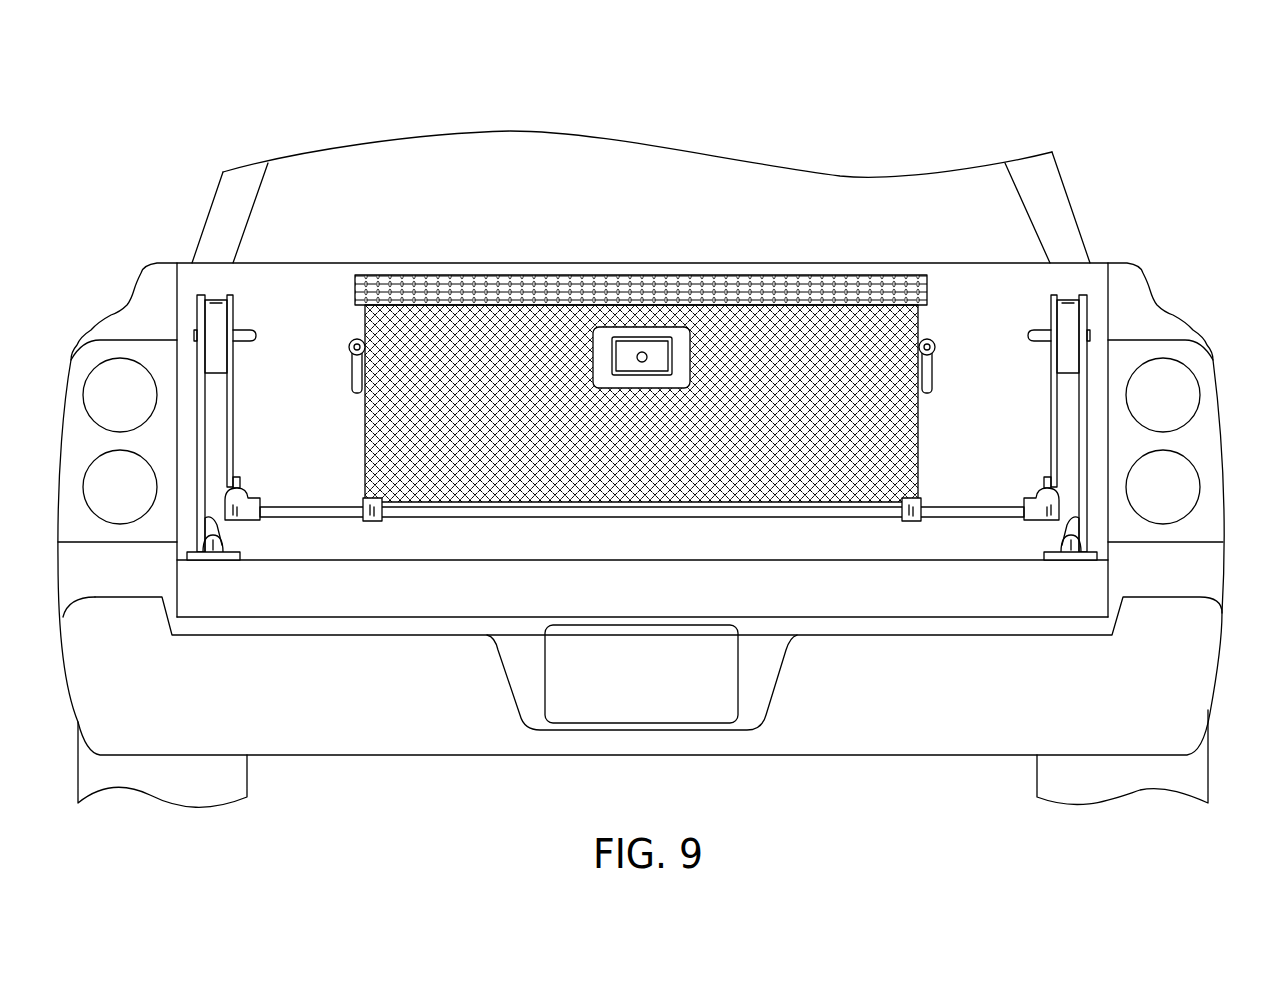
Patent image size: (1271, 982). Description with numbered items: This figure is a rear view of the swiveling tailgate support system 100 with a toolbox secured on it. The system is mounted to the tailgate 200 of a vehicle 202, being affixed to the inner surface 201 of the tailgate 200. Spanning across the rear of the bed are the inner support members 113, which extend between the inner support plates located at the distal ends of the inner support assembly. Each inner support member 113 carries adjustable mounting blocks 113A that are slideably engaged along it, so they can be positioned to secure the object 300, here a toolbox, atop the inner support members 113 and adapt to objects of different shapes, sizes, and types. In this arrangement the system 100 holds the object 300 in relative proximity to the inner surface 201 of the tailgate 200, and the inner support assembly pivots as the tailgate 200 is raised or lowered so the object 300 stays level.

The swiveling tailgate support system 100 is at (587, 304).
The inner support member 113 is at (293, 510).
The adjustable mounting block 113A is at (365, 498).
The tailgate 200 is at (287, 600).
The inner surface 201 is at (352, 537).
The vehicle 202 is at (1073, 204).
The object 300 is at (760, 318).